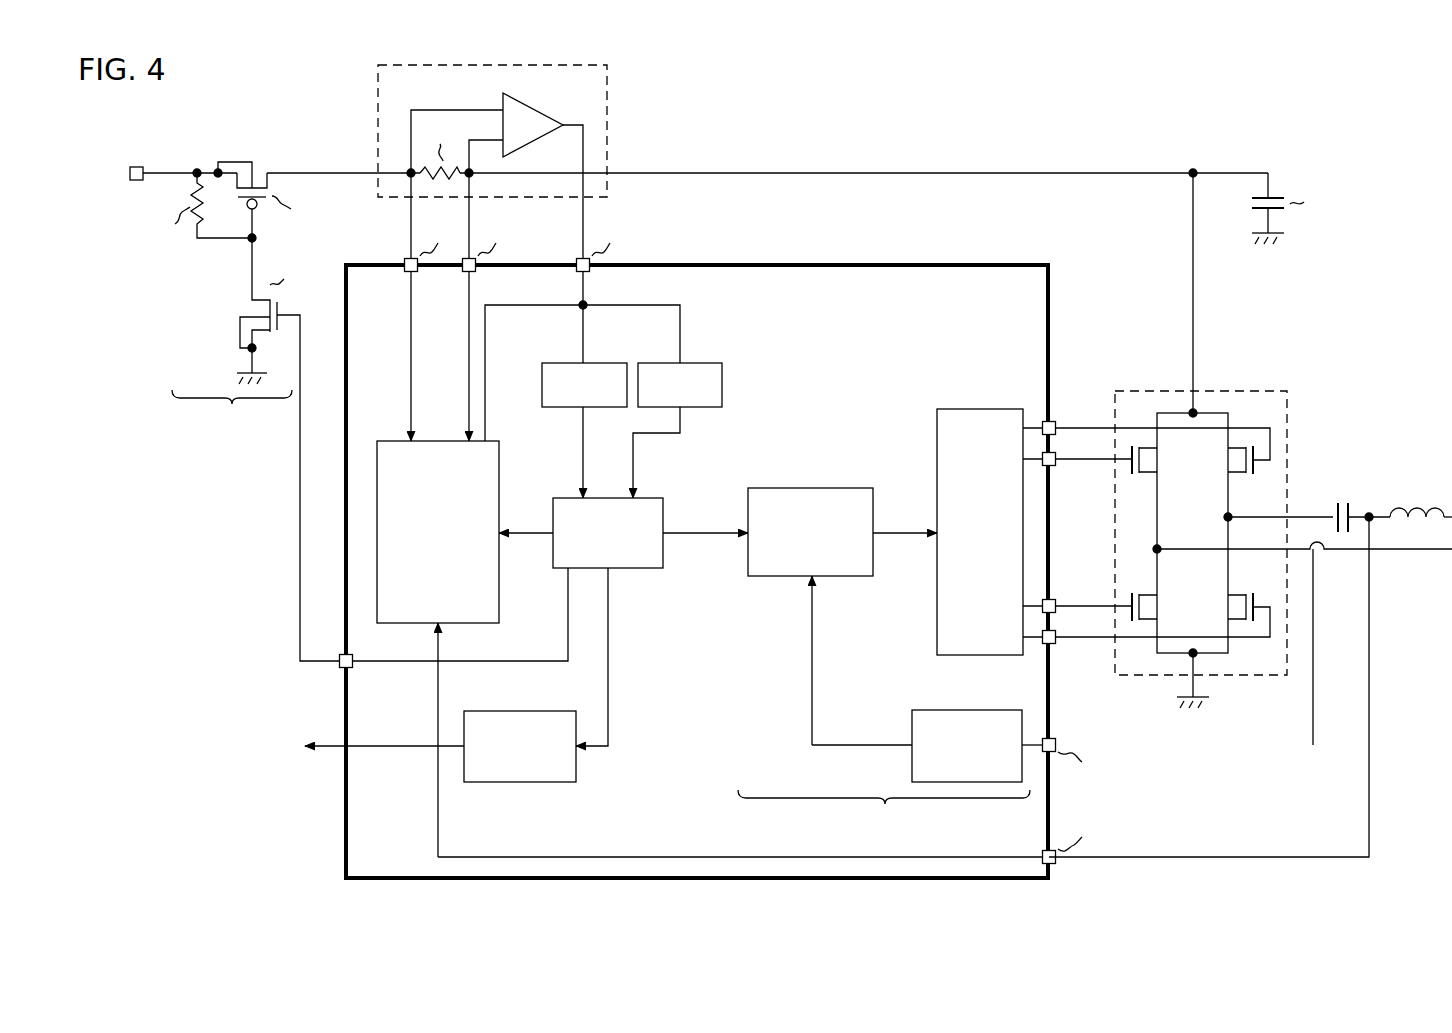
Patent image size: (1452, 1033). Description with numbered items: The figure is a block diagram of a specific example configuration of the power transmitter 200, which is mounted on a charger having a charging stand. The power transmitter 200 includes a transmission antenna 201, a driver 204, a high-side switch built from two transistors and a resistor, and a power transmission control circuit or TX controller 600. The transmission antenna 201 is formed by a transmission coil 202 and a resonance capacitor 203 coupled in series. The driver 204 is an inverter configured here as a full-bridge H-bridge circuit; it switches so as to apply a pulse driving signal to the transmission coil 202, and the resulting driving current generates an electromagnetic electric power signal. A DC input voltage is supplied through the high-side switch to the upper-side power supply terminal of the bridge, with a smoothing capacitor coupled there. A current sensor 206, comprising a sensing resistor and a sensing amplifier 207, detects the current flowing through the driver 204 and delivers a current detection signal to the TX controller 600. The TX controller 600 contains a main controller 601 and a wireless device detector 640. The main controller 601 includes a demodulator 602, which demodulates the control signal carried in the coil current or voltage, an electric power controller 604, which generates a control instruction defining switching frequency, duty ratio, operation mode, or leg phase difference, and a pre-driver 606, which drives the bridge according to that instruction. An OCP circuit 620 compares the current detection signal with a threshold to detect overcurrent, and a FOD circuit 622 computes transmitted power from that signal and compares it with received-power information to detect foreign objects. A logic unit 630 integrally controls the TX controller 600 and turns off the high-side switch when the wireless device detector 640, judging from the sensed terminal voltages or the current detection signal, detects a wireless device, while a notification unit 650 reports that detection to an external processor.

The power transmitter 200 is at (1397, 71).
The transmission antenna 201 is at (1447, 446).
The transmission coil 202 is at (1415, 496).
The resonance capacitor 203 is at (1340, 496).
The driver 204 is at (1270, 375).
The current sensor 206 is at (607, 86).
The sensing amplifier 207 is at (523, 106).
The power transmission control circuit (TX controller) 600 is at (725, 880).
The main controller 601 is at (884, 816).
The demodulator 602 is at (992, 696).
The electric power controller 604 is at (855, 472).
The pre-driver 606 is at (990, 394).
The OCP (overcurrent protection) circuit 620 is at (714, 350).
The FOD (foreign object detection) circuit 622 is at (620, 350).
The logic unit 630 is at (670, 481).
The wireless device detector 640 is at (394, 436).
The notification unit 650 is at (498, 712).